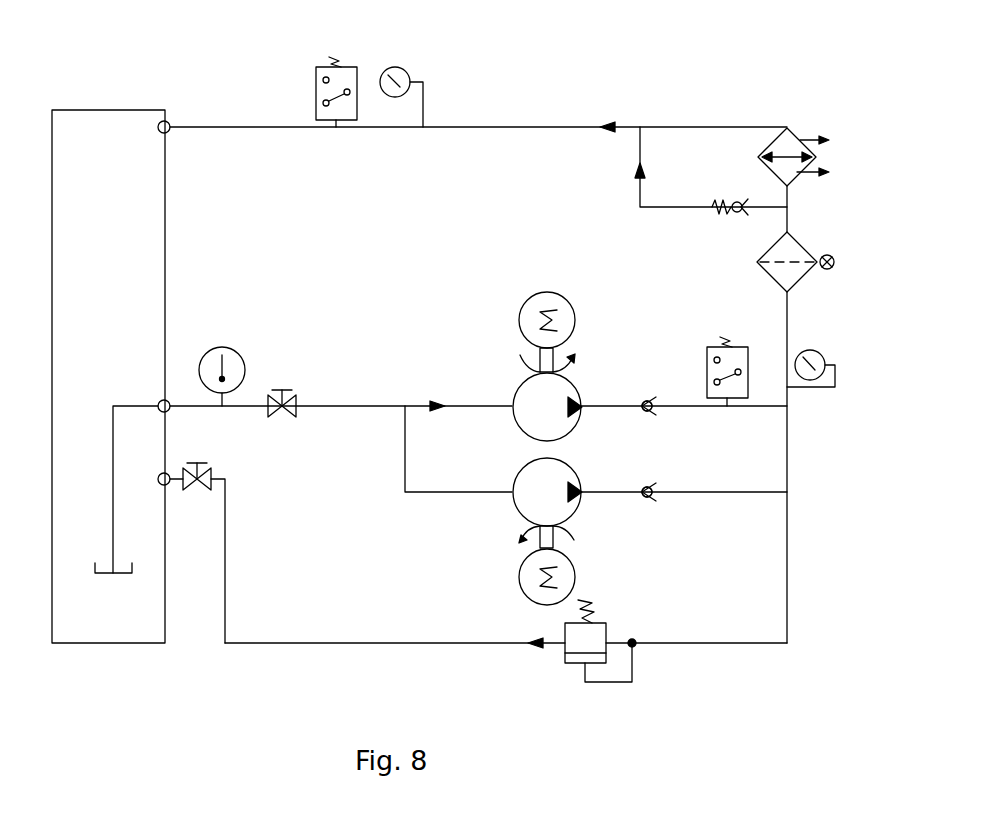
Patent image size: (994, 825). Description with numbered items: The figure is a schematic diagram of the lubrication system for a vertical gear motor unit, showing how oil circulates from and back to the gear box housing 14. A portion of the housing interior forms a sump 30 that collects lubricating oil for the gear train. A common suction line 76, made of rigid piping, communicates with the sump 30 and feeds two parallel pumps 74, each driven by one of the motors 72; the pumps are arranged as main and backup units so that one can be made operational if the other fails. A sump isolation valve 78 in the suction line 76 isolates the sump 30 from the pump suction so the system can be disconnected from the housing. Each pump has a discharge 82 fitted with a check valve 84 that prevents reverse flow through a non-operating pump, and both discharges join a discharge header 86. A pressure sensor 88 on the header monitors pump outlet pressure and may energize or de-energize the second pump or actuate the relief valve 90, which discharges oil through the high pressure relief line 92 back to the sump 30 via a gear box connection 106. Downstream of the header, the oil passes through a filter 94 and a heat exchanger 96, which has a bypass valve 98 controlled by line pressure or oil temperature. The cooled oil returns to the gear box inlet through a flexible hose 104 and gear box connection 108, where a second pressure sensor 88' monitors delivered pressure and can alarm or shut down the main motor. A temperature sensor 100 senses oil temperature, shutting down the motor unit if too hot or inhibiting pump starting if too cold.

The gear box housing 14 is at (93, 251).
The sump 30 is at (107, 617).
The motors 72 is at (520, 318).
The pumps 74 is at (537, 416).
The common suction line 76 is at (357, 404).
The sump isolation valve 78 is at (297, 403).
The pump discharge 82 is at (614, 404).
The check valve 84 is at (663, 418).
The discharge header 86 is at (787, 452).
The pressure sensor 88 is at (699, 348).
The pressure sensor 88' is at (288, 69).
The relief valve 90 is at (588, 665).
The high pressure relief line 92 is at (345, 645).
The filter 94 is at (829, 254).
The heat exchanger 96 is at (801, 139).
The heat exchanger bypass valve 98 is at (733, 214).
The temperature sensor 100 is at (249, 375).
The flexible hose 104 is at (257, 129).
The gear box connection 106 is at (197, 465).
The gear box connection 108 is at (168, 121).